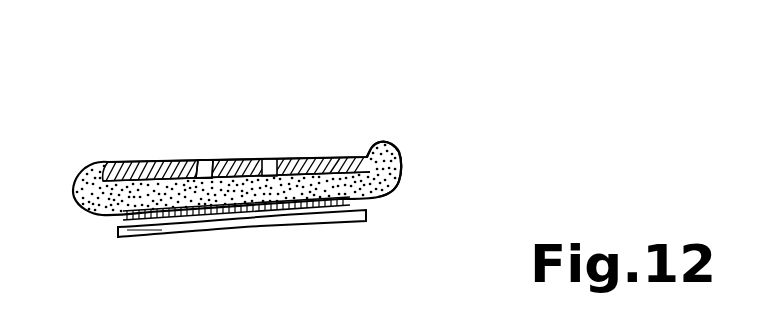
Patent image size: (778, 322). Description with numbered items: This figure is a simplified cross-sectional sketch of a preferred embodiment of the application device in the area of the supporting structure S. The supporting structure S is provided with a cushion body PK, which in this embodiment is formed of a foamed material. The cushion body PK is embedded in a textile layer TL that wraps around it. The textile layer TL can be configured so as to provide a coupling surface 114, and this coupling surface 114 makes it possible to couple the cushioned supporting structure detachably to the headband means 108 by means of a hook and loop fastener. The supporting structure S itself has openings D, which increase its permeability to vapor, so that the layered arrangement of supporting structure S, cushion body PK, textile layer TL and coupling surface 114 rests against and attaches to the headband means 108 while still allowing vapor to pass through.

The cushion body PK is at (77, 203).
The supporting structure S is at (175, 158).
The openings D is at (214, 158).
The textile layer TL is at (397, 153).
The coupling surface 114 is at (265, 216).
The headband means 108 is at (340, 220).